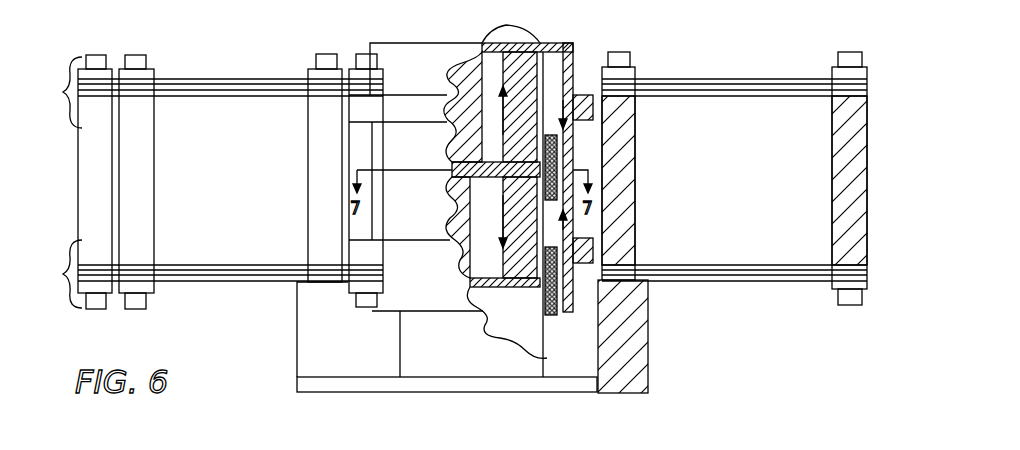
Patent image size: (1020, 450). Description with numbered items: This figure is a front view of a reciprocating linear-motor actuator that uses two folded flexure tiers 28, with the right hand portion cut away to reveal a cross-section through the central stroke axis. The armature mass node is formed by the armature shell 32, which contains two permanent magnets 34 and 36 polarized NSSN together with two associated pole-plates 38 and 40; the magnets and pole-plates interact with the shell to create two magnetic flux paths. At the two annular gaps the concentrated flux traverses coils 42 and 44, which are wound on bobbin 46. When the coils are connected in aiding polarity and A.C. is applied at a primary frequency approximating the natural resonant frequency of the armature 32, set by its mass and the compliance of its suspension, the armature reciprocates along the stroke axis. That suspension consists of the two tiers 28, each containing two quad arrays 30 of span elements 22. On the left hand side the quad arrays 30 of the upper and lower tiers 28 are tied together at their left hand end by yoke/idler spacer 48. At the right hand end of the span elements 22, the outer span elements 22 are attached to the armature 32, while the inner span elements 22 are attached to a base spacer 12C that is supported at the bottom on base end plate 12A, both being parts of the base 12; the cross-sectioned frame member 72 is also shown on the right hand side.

The base 12 is at (385, 383).
The base end plate 12A is at (340, 359).
The base spacer 12C is at (327, 153).
The span elements 22 is at (215, 90).
The tiers 28 is at (56, 182).
The quad arrays 30 is at (190, 62).
The armature shell 32 is at (440, 67).
The permanent magnet 34 is at (480, 86).
The permanent magnet 36 is at (490, 283).
The pole-plate 38 is at (452, 166).
The pole-plate 40 is at (502, 290).
The coil 42 is at (557, 152).
The coil 44 is at (578, 413).
The bobbin 46 is at (475, 365).
The yoke/idler spacer 48 is at (125, 165).
The frame bar 72 is at (540, 43).